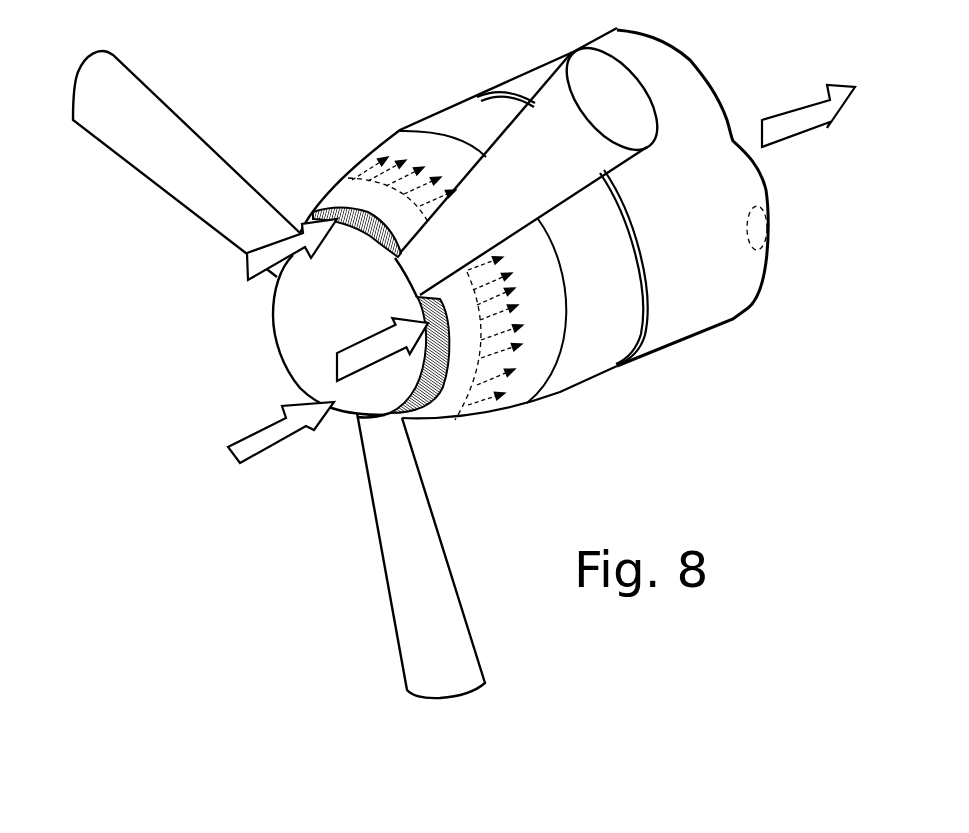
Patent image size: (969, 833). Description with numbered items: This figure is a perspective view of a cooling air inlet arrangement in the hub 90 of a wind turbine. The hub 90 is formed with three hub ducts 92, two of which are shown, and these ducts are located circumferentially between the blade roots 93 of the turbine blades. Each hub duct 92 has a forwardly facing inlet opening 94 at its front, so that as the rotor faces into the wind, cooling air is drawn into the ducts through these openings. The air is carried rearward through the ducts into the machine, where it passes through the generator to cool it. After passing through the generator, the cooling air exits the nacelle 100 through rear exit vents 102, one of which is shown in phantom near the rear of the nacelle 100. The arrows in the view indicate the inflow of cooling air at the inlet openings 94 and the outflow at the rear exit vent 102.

The hub 90 is at (290, 317).
The hub duct 92 is at (353, 193).
The blade root 93 is at (407, 280).
The inlet opening 94 is at (370, 236).
The nacelle 100 is at (743, 268).
The rear exit vent 102 is at (768, 229).